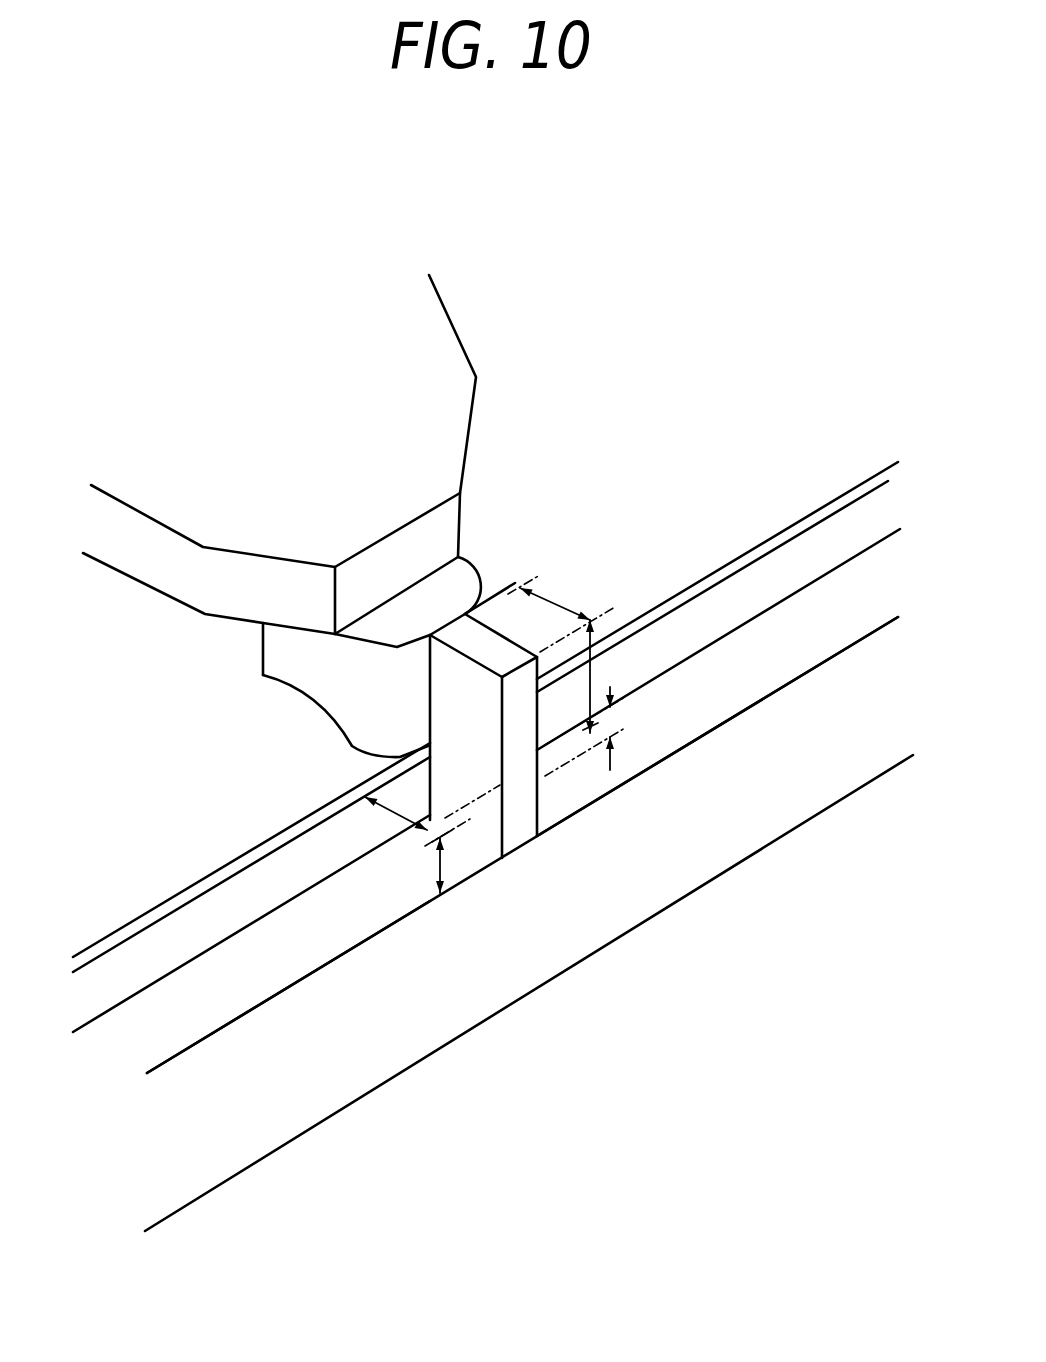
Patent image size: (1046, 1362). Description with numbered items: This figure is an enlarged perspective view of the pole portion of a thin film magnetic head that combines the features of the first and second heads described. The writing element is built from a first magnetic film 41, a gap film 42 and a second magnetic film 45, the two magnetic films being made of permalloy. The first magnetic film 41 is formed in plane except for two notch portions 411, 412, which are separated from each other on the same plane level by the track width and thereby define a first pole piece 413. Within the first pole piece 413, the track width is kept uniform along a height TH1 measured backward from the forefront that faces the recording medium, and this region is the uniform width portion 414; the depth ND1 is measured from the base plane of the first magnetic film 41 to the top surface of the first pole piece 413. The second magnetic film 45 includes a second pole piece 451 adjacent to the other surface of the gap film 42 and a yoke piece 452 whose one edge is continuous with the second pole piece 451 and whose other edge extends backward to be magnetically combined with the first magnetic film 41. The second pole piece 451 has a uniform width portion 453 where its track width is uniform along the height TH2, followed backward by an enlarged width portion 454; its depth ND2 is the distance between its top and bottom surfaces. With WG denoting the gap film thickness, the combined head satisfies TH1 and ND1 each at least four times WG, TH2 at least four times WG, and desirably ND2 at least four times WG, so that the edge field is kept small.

The first magnetic film 41 is at (172, 1148).
The gap film 42 is at (227, 868).
The notch portion 411 is at (217, 997).
The notch portion 412 is at (870, 605).
The first pole piece 413 is at (517, 820).
The uniform width portion 414 is at (480, 825).
The second magnetic film 45 is at (326, 485).
The second pole piece 451 is at (473, 557).
The yoke piece 452 is at (420, 390).
The uniform width portion 453 is at (490, 650).
The enlarged width portion 454 is at (282, 650).
The height of uniform width portion TH1 is at (383, 815).
The height of uniform width portion TH2 is at (550, 598).
The depth of first pole piece ND1 is at (438, 867).
The depth of second pole piece ND2 is at (593, 678).
The gap film thickness WG is at (610, 723).